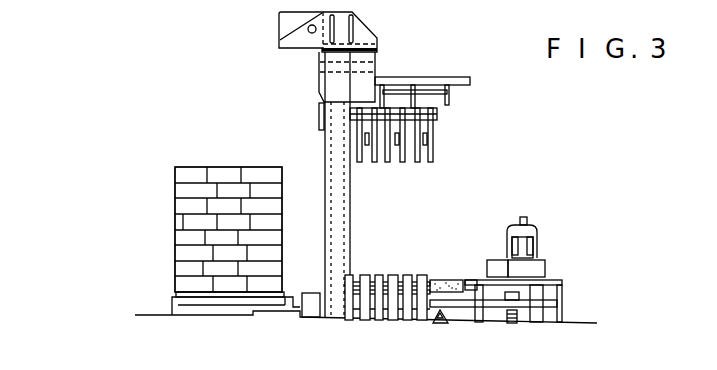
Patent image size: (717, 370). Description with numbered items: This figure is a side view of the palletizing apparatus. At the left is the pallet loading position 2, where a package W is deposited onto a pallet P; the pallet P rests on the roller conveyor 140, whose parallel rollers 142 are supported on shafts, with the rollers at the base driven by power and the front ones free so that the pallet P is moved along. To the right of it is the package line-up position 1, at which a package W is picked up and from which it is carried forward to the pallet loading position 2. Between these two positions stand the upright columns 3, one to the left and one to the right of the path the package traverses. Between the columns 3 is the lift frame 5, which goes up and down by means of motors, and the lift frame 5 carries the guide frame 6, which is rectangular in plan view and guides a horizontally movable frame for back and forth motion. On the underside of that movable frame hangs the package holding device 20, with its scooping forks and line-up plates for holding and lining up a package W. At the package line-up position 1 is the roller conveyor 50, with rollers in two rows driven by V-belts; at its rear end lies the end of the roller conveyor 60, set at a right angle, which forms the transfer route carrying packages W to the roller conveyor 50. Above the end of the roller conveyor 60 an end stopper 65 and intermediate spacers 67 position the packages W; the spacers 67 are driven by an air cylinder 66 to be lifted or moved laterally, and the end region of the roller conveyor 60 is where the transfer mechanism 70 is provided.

The package line-up position 1 is at (383, 247).
The pallet loading position 2 is at (167, 238).
The upright columns 3 is at (350, 184).
The lift frame 5 is at (318, 62).
The guide frame 6 is at (462, 77).
The package holding device 20 is at (450, 125).
The roller conveyor 50 is at (422, 247).
The roller conveyor 60 is at (568, 277).
The end stopper 65 is at (494, 260).
The air cylinder 66 is at (523, 217).
The intermediate spacers 67 is at (532, 268).
The transfer mechanism 70 is at (467, 252).
The roller conveyor 140 is at (124, 290).
The rollers 142 is at (281, 295).
The package W is at (175, 173).
The pallet P is at (175, 290).